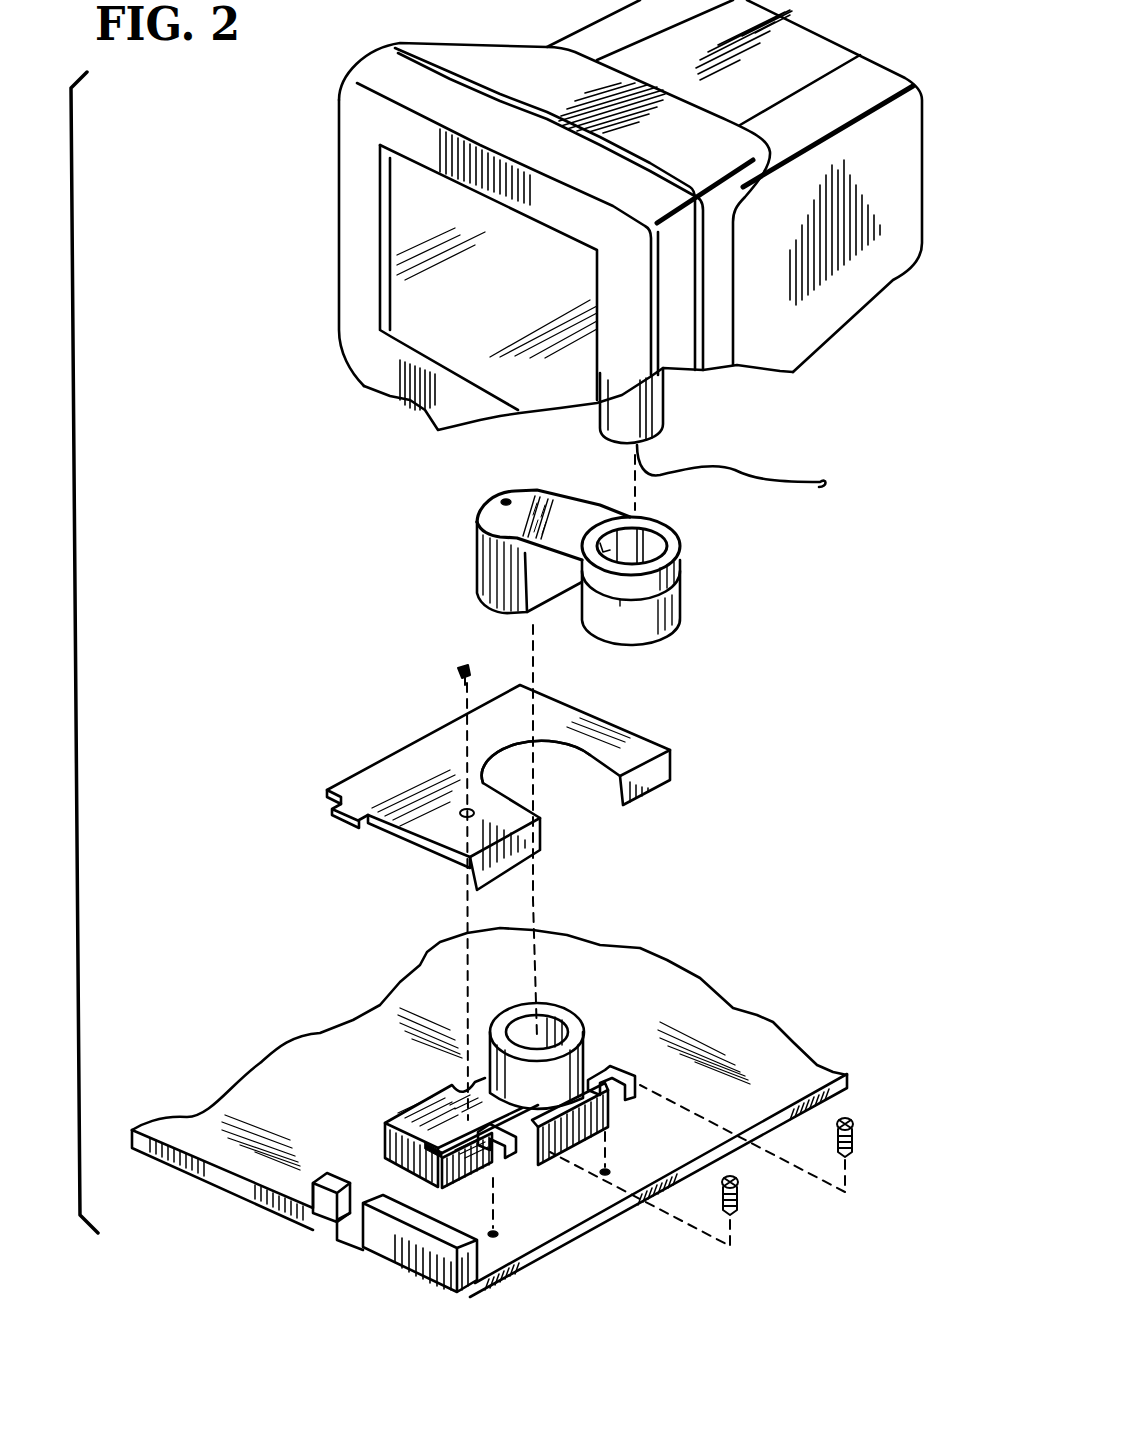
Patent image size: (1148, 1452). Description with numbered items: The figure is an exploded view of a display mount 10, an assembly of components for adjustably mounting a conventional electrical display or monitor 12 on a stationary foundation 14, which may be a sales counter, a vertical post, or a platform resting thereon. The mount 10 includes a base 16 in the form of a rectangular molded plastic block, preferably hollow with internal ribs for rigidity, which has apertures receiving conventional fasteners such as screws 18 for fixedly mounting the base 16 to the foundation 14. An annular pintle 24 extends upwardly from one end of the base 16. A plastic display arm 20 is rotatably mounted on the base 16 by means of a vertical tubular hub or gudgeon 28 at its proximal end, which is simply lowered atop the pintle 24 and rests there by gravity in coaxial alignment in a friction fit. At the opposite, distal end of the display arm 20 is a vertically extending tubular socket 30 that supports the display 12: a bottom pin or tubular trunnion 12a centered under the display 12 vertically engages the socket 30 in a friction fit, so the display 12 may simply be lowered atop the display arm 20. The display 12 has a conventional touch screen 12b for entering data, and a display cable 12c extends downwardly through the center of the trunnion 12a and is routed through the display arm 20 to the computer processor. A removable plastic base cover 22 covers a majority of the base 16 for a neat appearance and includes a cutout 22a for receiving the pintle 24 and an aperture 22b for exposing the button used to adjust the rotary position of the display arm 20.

The display mount 10 is at (197, 358).
The display 12 is at (830, 312).
The trunnion 12a is at (650, 413).
The touch screen 12b is at (403, 220).
The display cable 12c is at (787, 480).
The foundation 14 is at (365, 1027).
The base 16 is at (384, 1120).
The screws 18 is at (740, 1205).
The display arm 20 is at (588, 579).
The base cover 22 is at (357, 787).
The cutout 22a is at (580, 760).
The aperture 22b is at (460, 820).
The pintle 24 is at (575, 1007).
The gudgeon 28 is at (477, 557).
The socket 30 is at (677, 537).